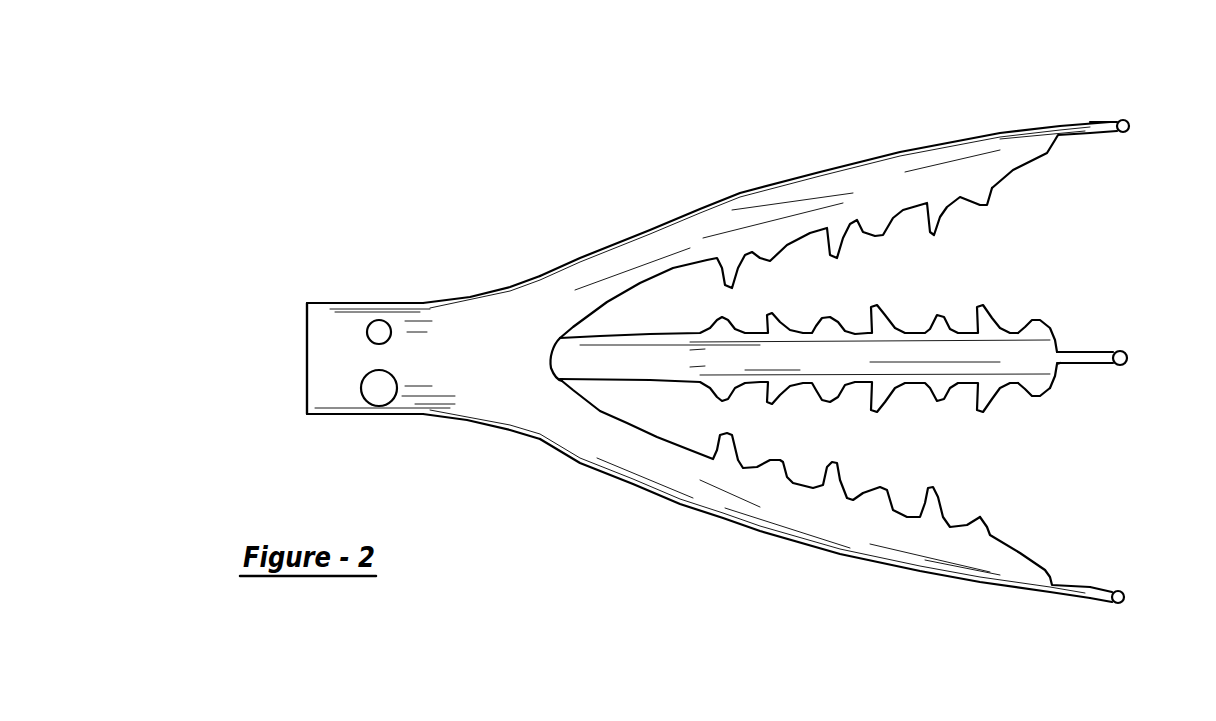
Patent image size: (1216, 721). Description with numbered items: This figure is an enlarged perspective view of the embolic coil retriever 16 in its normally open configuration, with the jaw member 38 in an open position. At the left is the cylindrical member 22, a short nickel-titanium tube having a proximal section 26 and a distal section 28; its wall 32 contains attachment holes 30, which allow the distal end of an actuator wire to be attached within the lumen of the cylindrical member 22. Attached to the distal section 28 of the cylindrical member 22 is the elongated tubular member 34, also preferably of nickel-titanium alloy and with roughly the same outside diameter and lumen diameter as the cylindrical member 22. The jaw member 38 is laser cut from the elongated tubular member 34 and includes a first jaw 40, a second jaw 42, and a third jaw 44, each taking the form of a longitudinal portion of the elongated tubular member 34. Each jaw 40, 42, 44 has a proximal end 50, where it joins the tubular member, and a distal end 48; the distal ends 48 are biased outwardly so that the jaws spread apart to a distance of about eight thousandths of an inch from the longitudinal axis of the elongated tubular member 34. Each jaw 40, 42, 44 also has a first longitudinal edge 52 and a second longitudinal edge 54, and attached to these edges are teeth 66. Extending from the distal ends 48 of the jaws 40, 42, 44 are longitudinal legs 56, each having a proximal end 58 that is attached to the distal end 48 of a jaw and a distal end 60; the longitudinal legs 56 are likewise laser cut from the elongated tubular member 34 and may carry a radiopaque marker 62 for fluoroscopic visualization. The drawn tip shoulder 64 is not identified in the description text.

The embolic coil retriever 16 is at (512, 148).
The cylindrical member 22 is at (452, 300).
The proximal section 26 is at (328, 388).
The distal section 28 is at (508, 412).
The attachment holes 30 is at (378, 320).
The wall 32 is at (440, 385).
The elongated tubular member 34 is at (522, 347).
The jaw member 38 is at (680, 507).
The first jaw 40 is at (822, 173).
The second jaw 42 is at (905, 357).
The third jaw 44 is at (833, 556).
The distal end 48 is at (1057, 380).
The proximal end 50 is at (514, 287).
The first longitudinal edge 52 is at (1016, 325).
The second longitudinal edge 54 is at (1015, 388).
The longitudinal legs 56 is at (1093, 134).
The proximal end 58 is at (1075, 122).
The distal end 60 is at (1118, 118).
The radiopaque marker 62 is at (1127, 354).
The lower arm tip 64 is at (1053, 570).
The teeth 66 is at (947, 230).